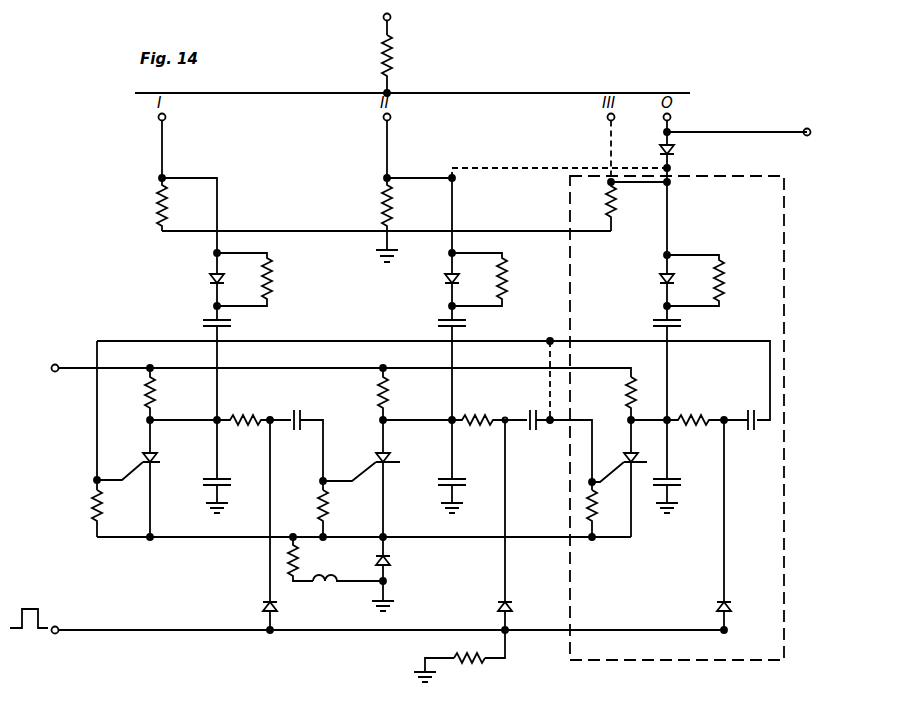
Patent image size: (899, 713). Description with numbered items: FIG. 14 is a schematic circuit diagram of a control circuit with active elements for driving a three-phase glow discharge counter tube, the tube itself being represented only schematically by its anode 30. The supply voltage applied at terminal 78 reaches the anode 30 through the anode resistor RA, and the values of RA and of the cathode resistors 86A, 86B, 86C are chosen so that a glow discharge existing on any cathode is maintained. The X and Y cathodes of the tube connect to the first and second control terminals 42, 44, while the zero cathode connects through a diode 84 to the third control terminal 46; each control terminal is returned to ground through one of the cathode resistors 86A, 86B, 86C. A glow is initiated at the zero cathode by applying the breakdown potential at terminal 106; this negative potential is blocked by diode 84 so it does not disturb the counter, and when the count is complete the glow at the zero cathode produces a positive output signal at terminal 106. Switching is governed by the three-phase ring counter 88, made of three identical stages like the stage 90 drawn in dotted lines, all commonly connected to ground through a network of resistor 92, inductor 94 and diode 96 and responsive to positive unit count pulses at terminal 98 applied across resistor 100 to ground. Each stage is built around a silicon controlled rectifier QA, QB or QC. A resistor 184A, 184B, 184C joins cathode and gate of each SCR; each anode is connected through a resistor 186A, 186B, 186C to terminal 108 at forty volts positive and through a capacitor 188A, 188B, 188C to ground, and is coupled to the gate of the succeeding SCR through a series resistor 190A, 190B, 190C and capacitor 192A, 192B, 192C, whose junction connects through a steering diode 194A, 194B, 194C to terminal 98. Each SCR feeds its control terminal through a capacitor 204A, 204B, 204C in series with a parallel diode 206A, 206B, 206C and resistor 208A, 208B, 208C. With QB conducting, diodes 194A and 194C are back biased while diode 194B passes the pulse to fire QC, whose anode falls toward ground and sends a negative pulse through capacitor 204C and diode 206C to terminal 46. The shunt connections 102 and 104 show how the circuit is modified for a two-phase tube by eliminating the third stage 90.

The anode 30 is at (545, 92).
The supply terminal 78 is at (391, 18).
The anode resistor RA is at (392, 58).
The input terminal I 42 is at (165, 150).
The input terminal II 44 is at (390, 148).
The control terminal 46 is at (611, 147).
The diode 84 is at (690, 152).
The cathode resistor 86A is at (162, 207).
The cathode resistor 86B is at (387, 206).
The cathode resistor 86C is at (622, 207).
The three-phase ring counter 88 is at (142, 322).
The stage 90 is at (710, 661).
The resistor 92 is at (283, 565).
The inductor 94 is at (322, 588).
The diode 96 is at (396, 559).
The unit count terminal 98 is at (55, 635).
The resistor 100 is at (468, 664).
The shunt connection 102 is at (548, 403).
The shunt connection 104 is at (506, 166).
The terminal 106 is at (810, 130).
The terminal 108 is at (58, 366).
The resistor 184A is at (62, 504).
The resistor 184B is at (343, 512).
The resistor 184C is at (600, 507).
The resistor 186A is at (158, 390).
The resistor 186B is at (412, 394).
The resistor 186C is at (618, 388).
The capacitor 188A is at (246, 465).
The capacitor 188B is at (478, 467).
The capacitor 188C is at (694, 469).
The resistor 190A is at (243, 411).
The resistor 190B is at (503, 396).
The resistor 190C is at (693, 415).
The capacitor 192A is at (312, 437).
The capacitor 192B is at (528, 443).
The capacitor 192C is at (762, 438).
The steering diode 194A is at (262, 606).
The steering diode 194B is at (546, 583).
The steering diode 194C is at (758, 589).
The capacitor 204A is at (240, 326).
The capacitor 204B is at (467, 331).
The capacitor 204C is at (690, 329).
The diode 206A is at (210, 281).
The diode 206B is at (443, 277).
The diode 206C is at (656, 280).
The resistor 208A is at (272, 290).
The resistor 208B is at (540, 263).
The resistor 208C is at (752, 243).
The silicon controlled rectifier QA is at (142, 478).
The silicon controlled rectifier QB is at (410, 468).
The silicon controlled rectifier QC is at (640, 469).